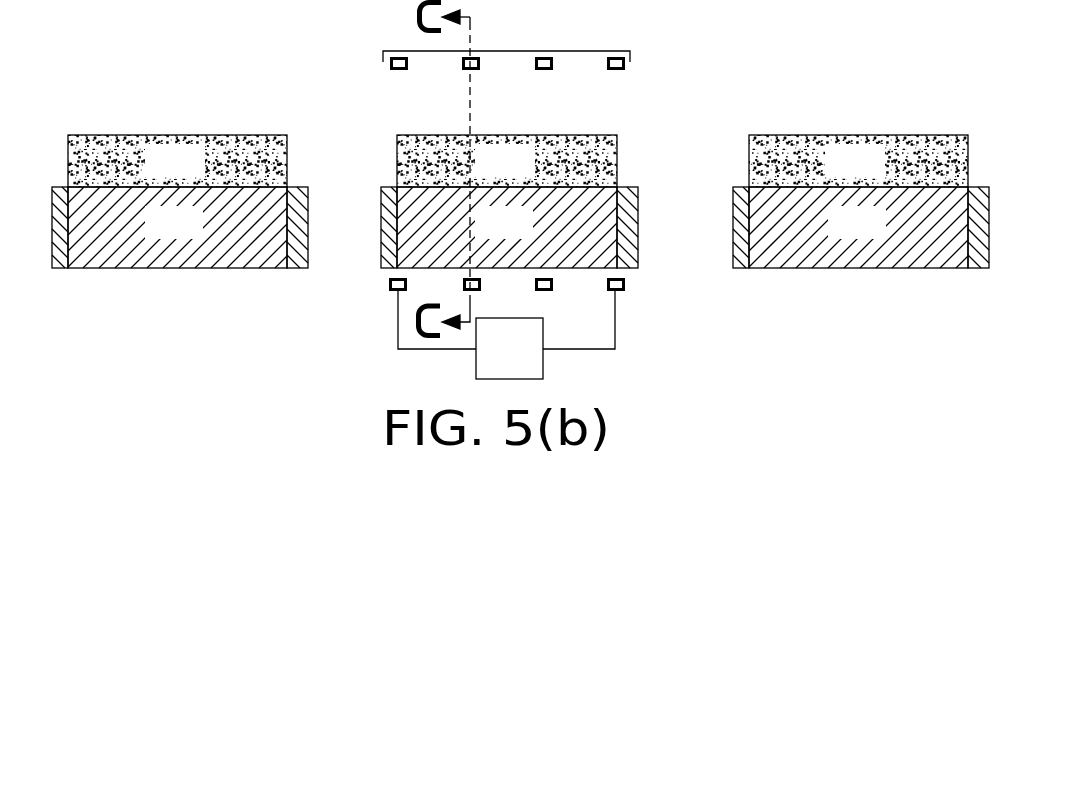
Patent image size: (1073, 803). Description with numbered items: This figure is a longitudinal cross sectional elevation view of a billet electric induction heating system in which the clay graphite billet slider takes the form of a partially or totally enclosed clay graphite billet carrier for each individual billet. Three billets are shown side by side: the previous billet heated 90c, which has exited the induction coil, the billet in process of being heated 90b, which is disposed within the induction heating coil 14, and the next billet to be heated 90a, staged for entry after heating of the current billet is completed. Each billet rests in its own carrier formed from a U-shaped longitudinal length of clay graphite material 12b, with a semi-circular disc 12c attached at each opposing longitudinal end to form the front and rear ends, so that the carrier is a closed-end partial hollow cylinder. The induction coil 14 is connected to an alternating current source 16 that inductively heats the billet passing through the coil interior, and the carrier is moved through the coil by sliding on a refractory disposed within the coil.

The induction heating coil 14 is at (507, 48).
The alternating current source 16 is at (507, 330).
The U-shaped longitudinal length of clay graphite material 12b is at (197, 236).
The semi-circular disc 12c is at (62, 268).
The next billet to be heated 90a is at (880, 173).
The billet in process of being heated 90b is at (530, 173).
The previous billet heated 90c is at (200, 173).